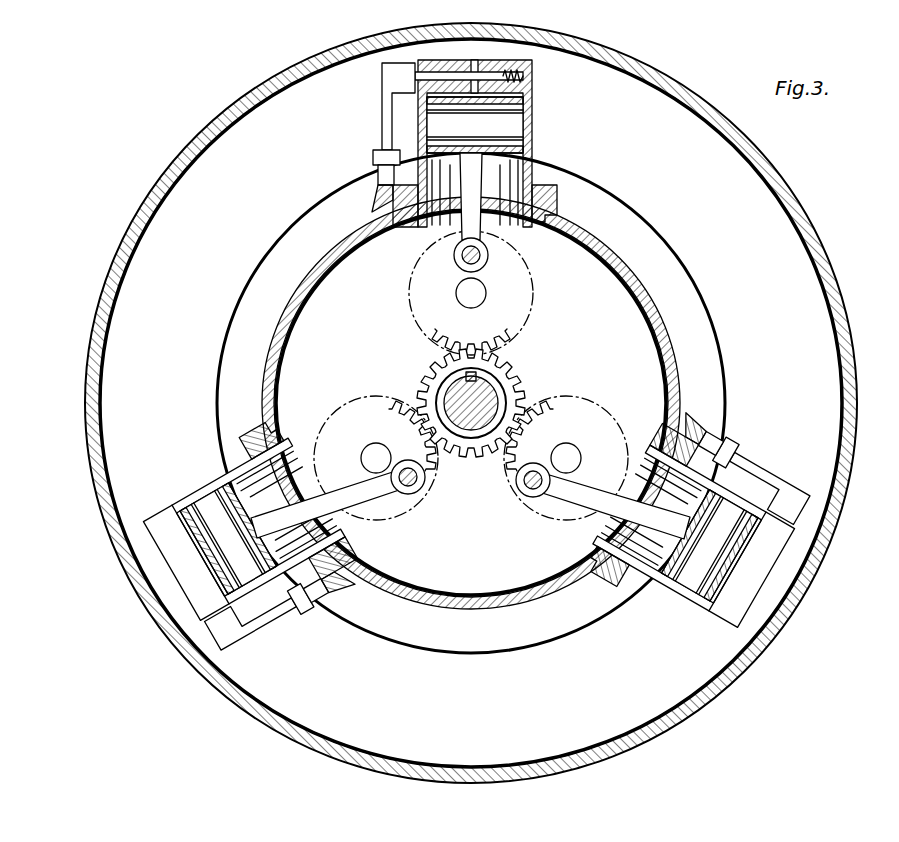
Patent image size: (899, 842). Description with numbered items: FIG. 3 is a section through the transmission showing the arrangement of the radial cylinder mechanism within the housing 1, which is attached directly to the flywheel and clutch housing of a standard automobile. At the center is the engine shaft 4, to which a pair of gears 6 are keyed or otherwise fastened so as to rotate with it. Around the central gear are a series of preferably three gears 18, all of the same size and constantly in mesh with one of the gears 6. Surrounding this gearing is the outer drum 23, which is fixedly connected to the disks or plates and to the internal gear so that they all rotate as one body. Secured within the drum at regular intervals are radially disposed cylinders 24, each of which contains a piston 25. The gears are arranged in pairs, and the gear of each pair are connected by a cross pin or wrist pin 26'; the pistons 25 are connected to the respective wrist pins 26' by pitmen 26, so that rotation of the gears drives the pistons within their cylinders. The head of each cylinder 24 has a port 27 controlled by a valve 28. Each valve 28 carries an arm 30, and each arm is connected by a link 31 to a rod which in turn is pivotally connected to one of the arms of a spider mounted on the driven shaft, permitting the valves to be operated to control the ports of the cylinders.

The housing 1 is at (130, 226).
The engine shaft 4 is at (447, 393).
The gears 6 is at (507, 370).
The gears 18 is at (505, 338).
The outer drum 23 is at (307, 283).
The cylinder 24 is at (533, 112).
The piston 25 is at (665, 594).
The pitman 26 is at (470, 356).
The wrist pin 26' is at (489, 373).
The port 27 is at (490, 62).
The valve 28 is at (445, 78).
The arm 30 is at (382, 112).
The link 31 is at (375, 205).